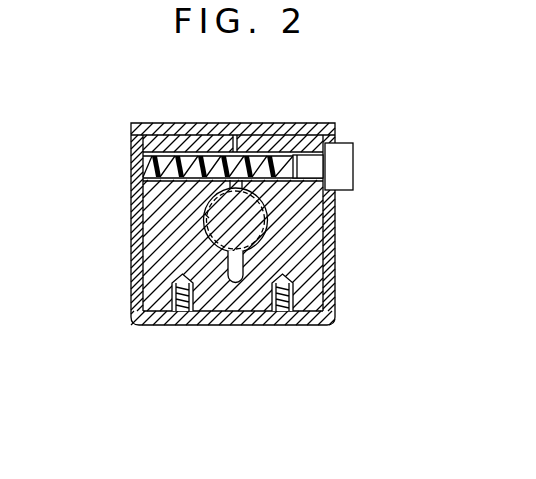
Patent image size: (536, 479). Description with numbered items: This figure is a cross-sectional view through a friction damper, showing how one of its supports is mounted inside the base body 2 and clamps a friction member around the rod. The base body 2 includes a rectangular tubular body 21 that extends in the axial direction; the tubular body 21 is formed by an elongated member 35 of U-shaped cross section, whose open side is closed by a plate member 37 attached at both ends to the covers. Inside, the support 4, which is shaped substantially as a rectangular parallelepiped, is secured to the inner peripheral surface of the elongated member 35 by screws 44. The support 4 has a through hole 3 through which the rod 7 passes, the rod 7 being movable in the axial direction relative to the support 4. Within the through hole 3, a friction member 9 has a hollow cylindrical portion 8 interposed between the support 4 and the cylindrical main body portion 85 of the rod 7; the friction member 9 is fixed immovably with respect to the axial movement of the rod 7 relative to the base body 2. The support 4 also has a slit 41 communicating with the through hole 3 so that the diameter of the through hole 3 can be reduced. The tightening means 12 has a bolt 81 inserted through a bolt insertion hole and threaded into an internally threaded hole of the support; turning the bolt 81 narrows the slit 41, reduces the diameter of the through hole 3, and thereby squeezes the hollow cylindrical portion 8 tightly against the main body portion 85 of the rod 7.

The base body 2 is at (130, 289).
The rectangular tubular body 21 is at (329, 323).
The elongated member 35 is at (137, 268).
The plate member 37 is at (272, 128).
The slit 41 is at (233, 148).
The support 4 is at (316, 270).
The through hole 3 is at (262, 234).
The hollow cylindrical portion 8 is at (266, 208).
The main body portion 85 is at (205, 216).
The friction member 9 is at (200, 228).
The rod 7 is at (229, 262).
The screws 44 is at (184, 314).
The bolt 81 is at (334, 156).
The tightening means 12 is at (357, 162).